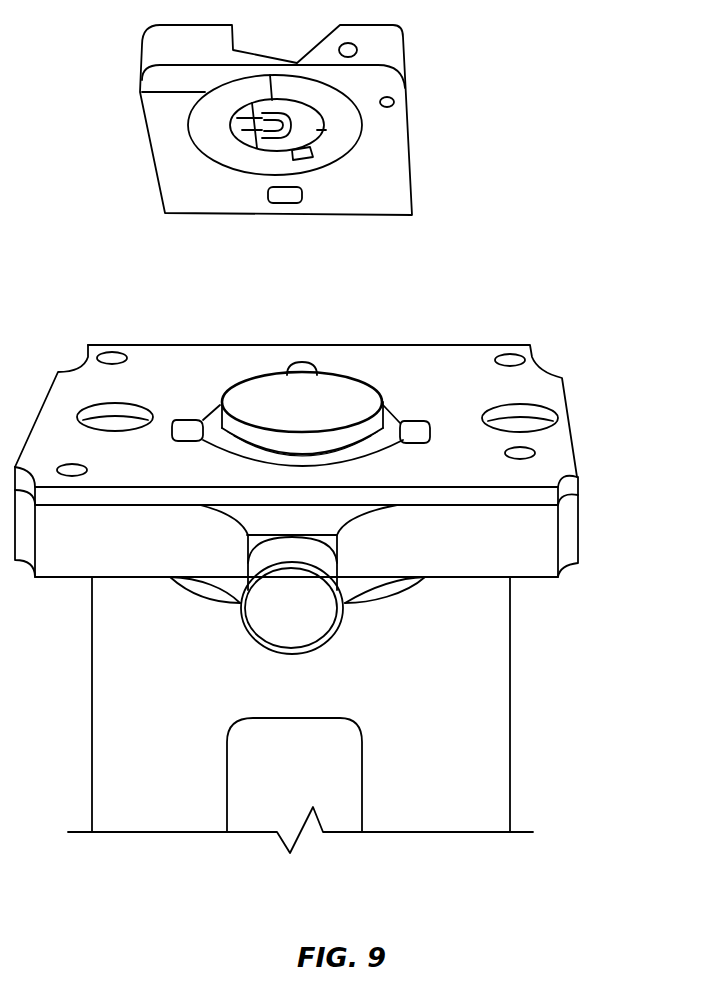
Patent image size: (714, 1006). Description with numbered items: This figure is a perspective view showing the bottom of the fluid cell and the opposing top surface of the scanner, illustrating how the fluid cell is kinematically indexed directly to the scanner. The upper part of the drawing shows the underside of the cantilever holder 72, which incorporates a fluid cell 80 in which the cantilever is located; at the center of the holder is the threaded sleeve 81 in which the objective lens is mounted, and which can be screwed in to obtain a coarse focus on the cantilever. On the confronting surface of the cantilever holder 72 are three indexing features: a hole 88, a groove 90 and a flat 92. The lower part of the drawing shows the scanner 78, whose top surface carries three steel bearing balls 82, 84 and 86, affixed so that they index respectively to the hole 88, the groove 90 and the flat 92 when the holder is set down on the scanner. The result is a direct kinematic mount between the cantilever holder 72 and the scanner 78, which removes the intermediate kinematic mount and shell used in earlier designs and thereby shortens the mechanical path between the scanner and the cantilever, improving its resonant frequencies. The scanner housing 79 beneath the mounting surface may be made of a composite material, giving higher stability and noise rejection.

The cantilever holder 72 is at (182, 193).
The groove 90 is at (173, 105).
The fluid cell 80 is at (318, 130).
The threaded sleeve 81 is at (240, 125).
The hole 88 is at (394, 101).
The flat 92 is at (286, 197).
The scanner 78 is at (550, 547).
The steel bearing ball 84 is at (187, 425).
The steel bearing ball 82 is at (413, 427).
The steel bearing ball 86 is at (310, 367).
The scanner housing 79 is at (490, 663).